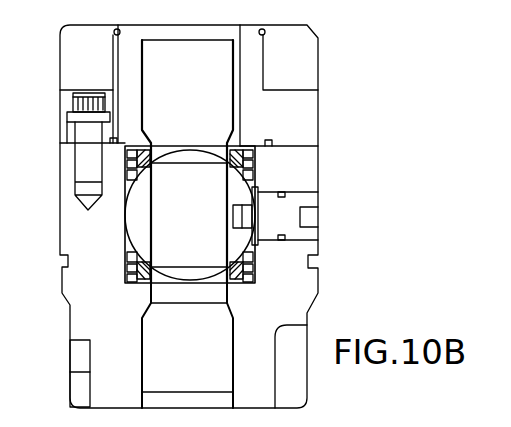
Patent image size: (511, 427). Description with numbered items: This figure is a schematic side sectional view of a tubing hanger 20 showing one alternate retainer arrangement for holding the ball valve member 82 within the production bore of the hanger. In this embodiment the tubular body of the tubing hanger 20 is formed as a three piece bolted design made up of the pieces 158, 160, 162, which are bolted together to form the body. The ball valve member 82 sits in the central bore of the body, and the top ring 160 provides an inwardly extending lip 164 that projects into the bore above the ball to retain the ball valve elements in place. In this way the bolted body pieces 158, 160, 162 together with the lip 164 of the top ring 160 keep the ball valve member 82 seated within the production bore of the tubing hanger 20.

The tubing hanger 20 is at (347, 262).
The ball valve member 82 is at (142, 215).
The body piece of three piece bolted design 158 is at (297, 318).
The top ring 160 is at (299, 130).
The body piece of three piece bolted design 162 is at (312, 80).
The inwardly extending lip 164 is at (150, 163).